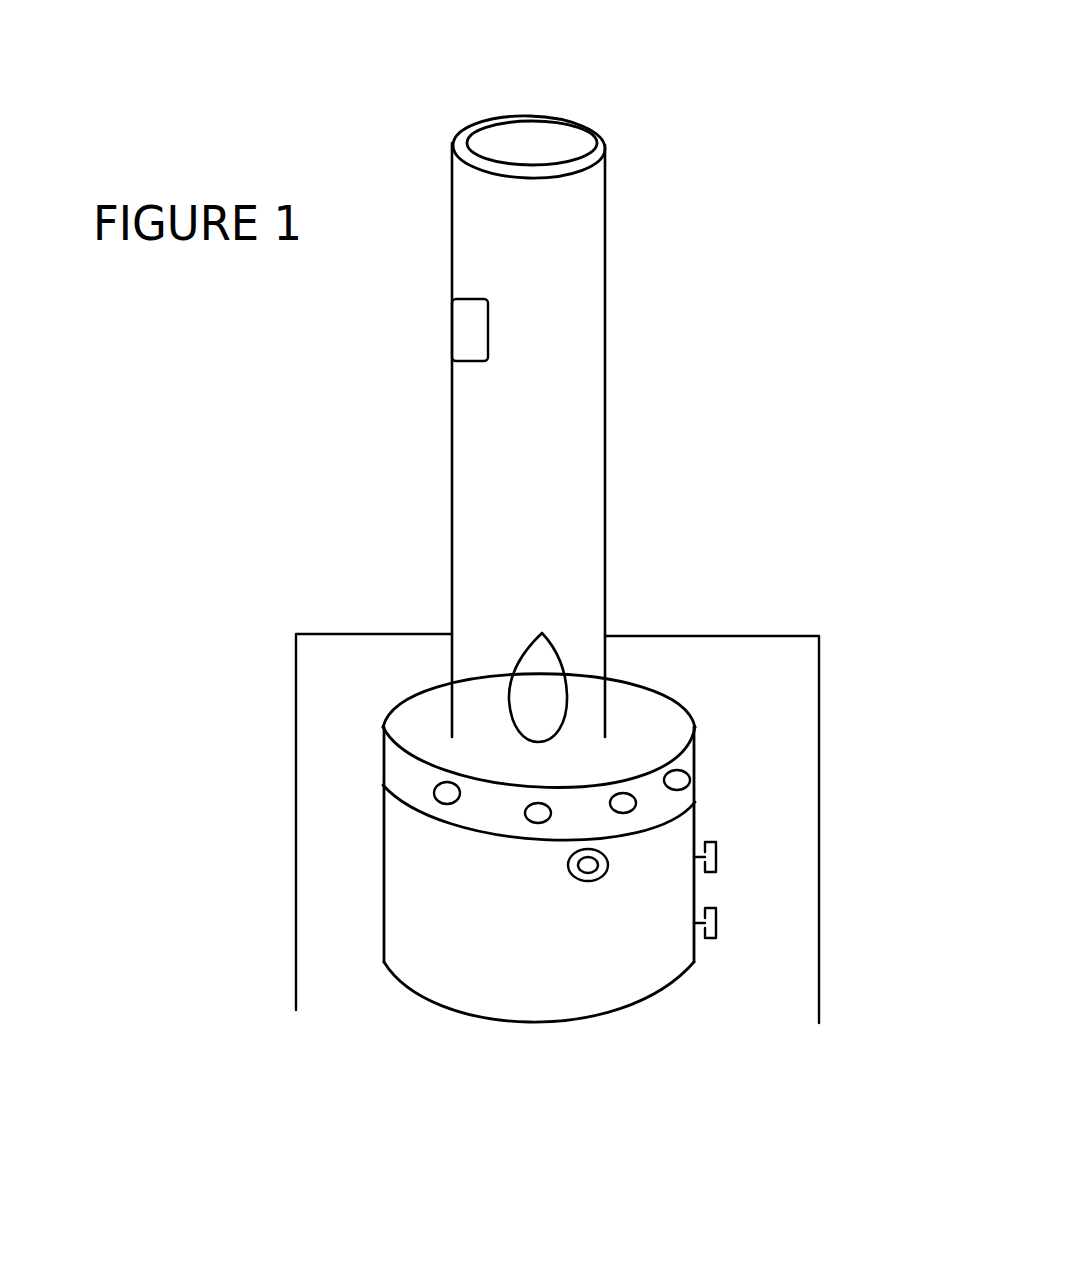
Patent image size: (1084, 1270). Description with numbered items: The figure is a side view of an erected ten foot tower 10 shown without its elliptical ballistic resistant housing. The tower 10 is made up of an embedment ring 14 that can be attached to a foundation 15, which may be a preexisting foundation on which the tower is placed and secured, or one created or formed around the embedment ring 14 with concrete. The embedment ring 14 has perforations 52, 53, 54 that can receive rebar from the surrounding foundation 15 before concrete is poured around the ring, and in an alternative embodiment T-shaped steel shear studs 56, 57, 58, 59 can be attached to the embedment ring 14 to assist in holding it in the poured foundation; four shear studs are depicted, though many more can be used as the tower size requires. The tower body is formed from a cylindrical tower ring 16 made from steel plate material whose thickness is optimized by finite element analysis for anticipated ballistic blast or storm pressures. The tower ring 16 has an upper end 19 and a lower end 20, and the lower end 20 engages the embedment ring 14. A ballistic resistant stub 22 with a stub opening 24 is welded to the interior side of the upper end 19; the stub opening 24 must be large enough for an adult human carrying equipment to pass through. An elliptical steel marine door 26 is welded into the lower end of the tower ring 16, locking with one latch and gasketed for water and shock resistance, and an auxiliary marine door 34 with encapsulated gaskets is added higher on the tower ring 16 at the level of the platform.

The tower 10 is at (395, 163).
The embedment ring 14 is at (657, 692).
The foundation 15 is at (292, 712).
The tower ring 16 is at (605, 339).
The upper end 19 is at (638, 233).
The lower end 20 is at (385, 567).
The ballistic resistant stub 22 is at (607, 147).
The stub opening 24 is at (537, 142).
The marine door 26 is at (562, 658).
The auxiliary marine door 34 is at (467, 330).
The perforation 52 is at (433, 792).
The perforation 53 is at (539, 825).
The perforation 54 is at (637, 804).
The shear stud 56 is at (690, 778).
The shear stud 57 is at (718, 860).
The shear stud 58 is at (718, 926).
The shear stud 59 is at (590, 881).